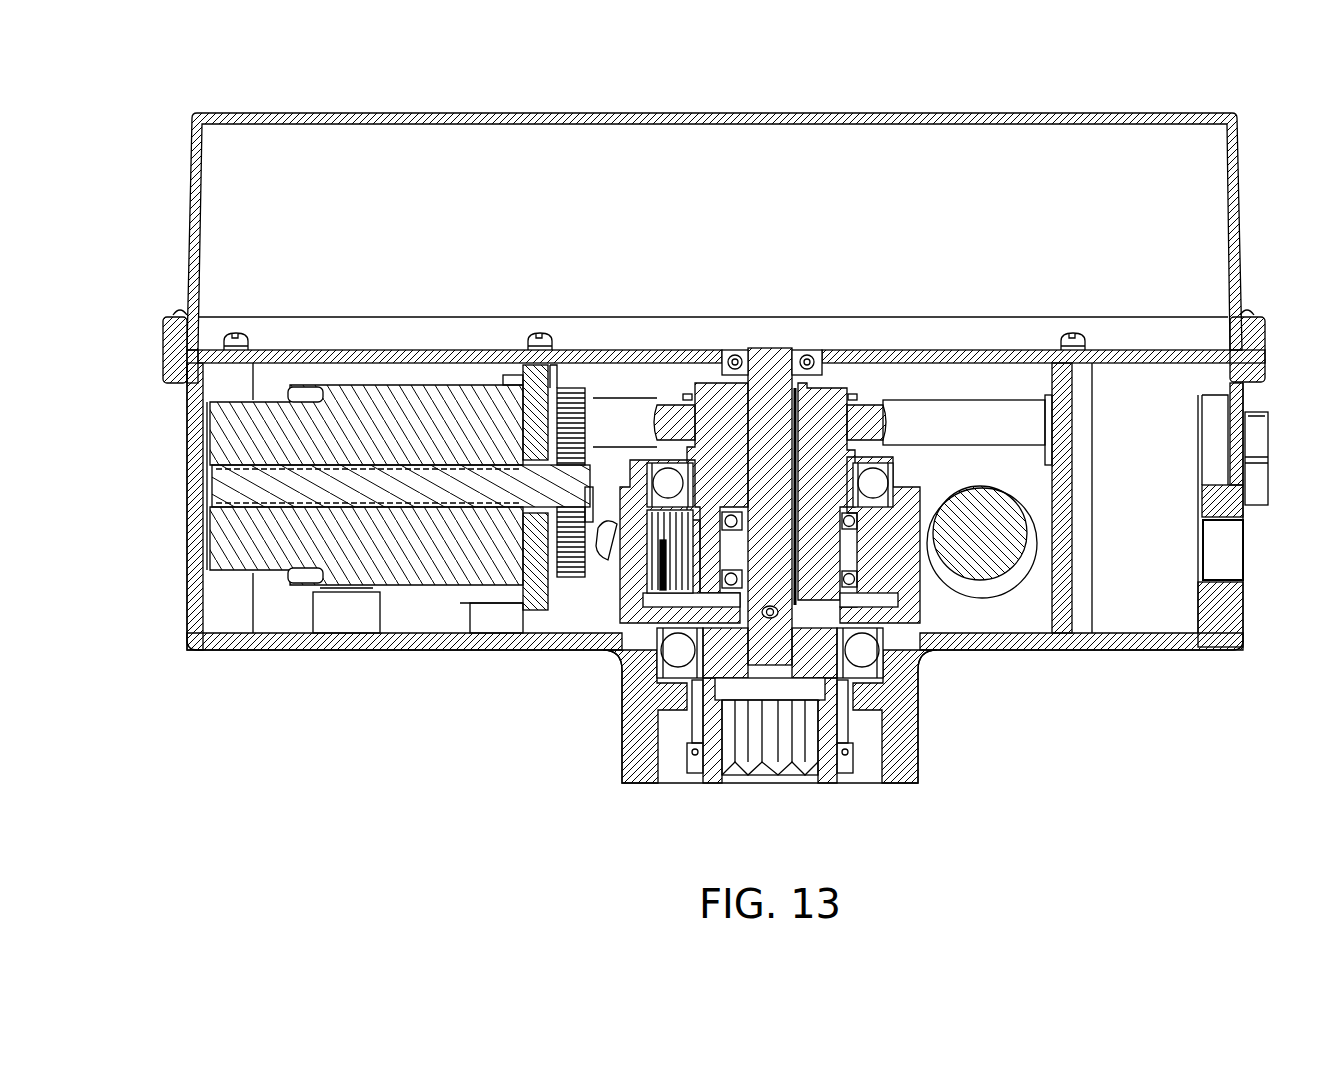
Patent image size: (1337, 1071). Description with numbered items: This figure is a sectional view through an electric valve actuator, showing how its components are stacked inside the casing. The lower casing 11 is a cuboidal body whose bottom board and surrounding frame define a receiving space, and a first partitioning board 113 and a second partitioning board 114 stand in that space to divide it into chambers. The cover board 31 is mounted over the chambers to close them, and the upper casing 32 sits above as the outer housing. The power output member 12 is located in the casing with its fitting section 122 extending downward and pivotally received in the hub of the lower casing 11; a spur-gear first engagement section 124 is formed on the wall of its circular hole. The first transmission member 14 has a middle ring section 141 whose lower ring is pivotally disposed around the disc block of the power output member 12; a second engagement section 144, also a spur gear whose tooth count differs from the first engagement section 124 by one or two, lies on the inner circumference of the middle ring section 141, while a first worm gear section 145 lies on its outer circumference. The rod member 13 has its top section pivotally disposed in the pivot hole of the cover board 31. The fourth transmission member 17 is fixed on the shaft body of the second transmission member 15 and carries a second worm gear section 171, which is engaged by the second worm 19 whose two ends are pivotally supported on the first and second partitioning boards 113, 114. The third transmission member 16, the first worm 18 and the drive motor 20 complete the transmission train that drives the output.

The lower casing 11 is at (1075, 653).
The power output member 12 is at (735, 775).
The fitting section 122 is at (790, 745).
The first engagement section 124 is at (675, 580).
The rod member 13 is at (765, 390).
The first transmission member 14 is at (920, 540).
The middle ring section 141 is at (625, 552).
The second engagement section 144 is at (623, 663).
The first worm gear section 145 is at (607, 543).
The second transmission member 15 is at (727, 423).
The third transmission member 16 is at (923, 495).
The fourth transmission member 17 is at (683, 417).
The second worm gear section 171 is at (898, 420).
The first worm 18 is at (998, 545).
The second worm 19 is at (960, 420).
The drive motor 20 is at (273, 438).
The cover board 31 is at (327, 347).
The upper casing 32 is at (294, 113).
The first partitioning board 113 is at (530, 417).
The second partitioning board 114 is at (1062, 507).